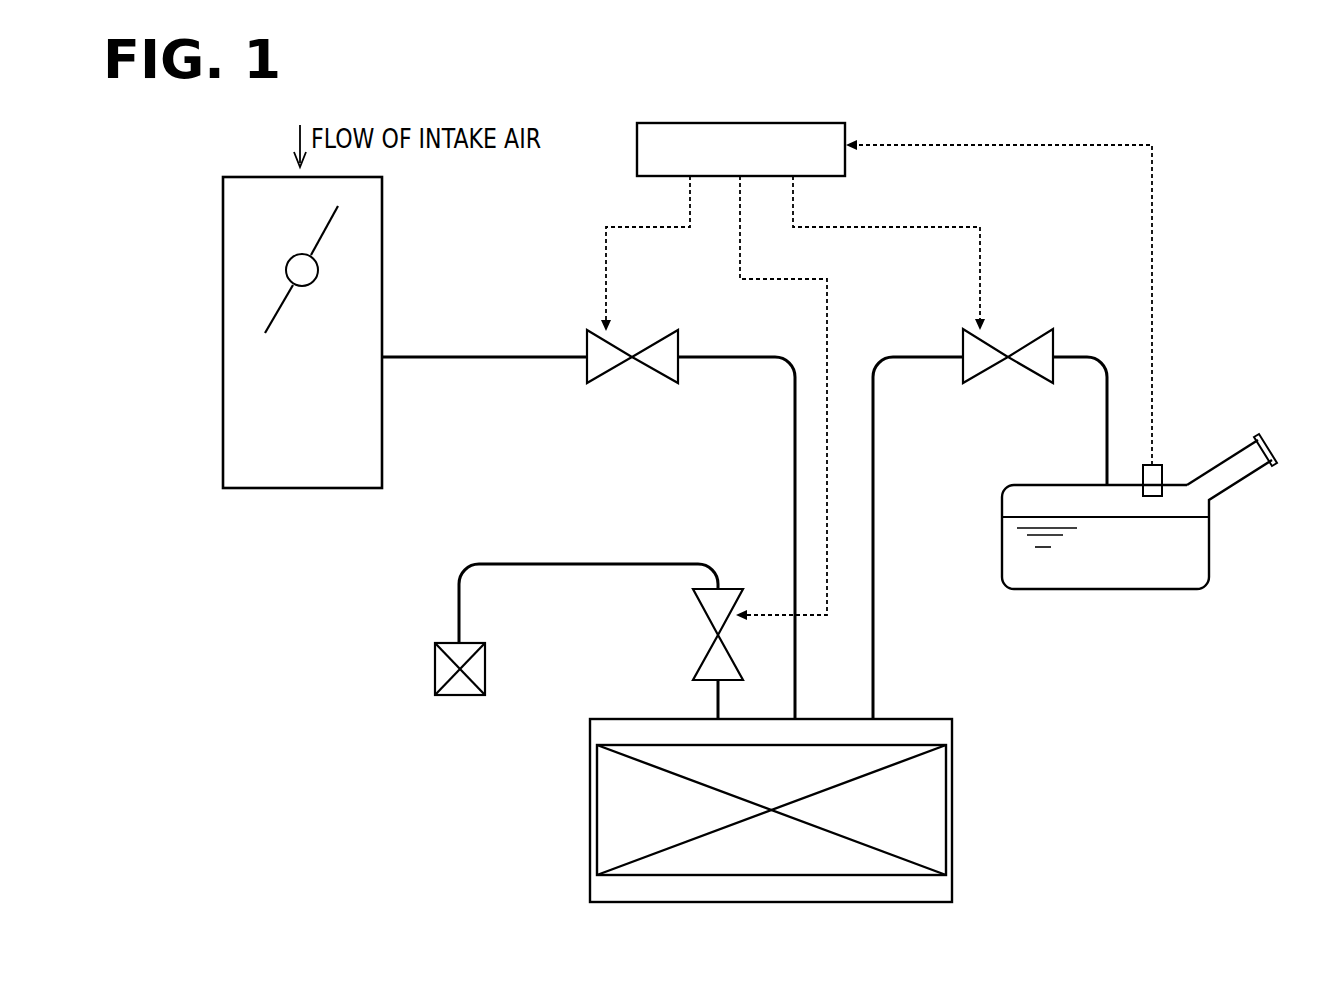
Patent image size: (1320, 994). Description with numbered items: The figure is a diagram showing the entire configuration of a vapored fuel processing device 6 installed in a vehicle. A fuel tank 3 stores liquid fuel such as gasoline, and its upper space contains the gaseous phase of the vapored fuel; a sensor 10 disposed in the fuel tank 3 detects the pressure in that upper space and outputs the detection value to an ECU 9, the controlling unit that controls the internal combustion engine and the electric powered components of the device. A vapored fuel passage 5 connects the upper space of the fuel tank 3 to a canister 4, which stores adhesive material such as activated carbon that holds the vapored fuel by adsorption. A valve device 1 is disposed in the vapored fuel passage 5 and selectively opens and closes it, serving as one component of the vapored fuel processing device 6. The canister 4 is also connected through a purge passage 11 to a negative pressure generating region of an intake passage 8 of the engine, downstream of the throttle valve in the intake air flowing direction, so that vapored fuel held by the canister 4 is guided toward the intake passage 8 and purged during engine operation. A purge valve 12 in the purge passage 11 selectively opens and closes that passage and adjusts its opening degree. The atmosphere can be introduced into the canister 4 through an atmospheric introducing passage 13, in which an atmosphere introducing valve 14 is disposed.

The valve device 1 is at (1040, 348).
The fuel tank 3 is at (1190, 558).
The canister 4 is at (935, 822).
The vapored fuel passage 5 is at (948, 358).
The vapored fuel processing device 6 is at (1200, 170).
The intake passage 8 is at (250, 307).
The ECU 9 is at (670, 152).
The sensor 10 is at (1160, 475).
The purge passage 11 is at (483, 356).
The purge valve 12 is at (593, 370).
The atmospheric introducing passage 13 is at (535, 562).
The atmosphere introducing valve 14 is at (708, 668).